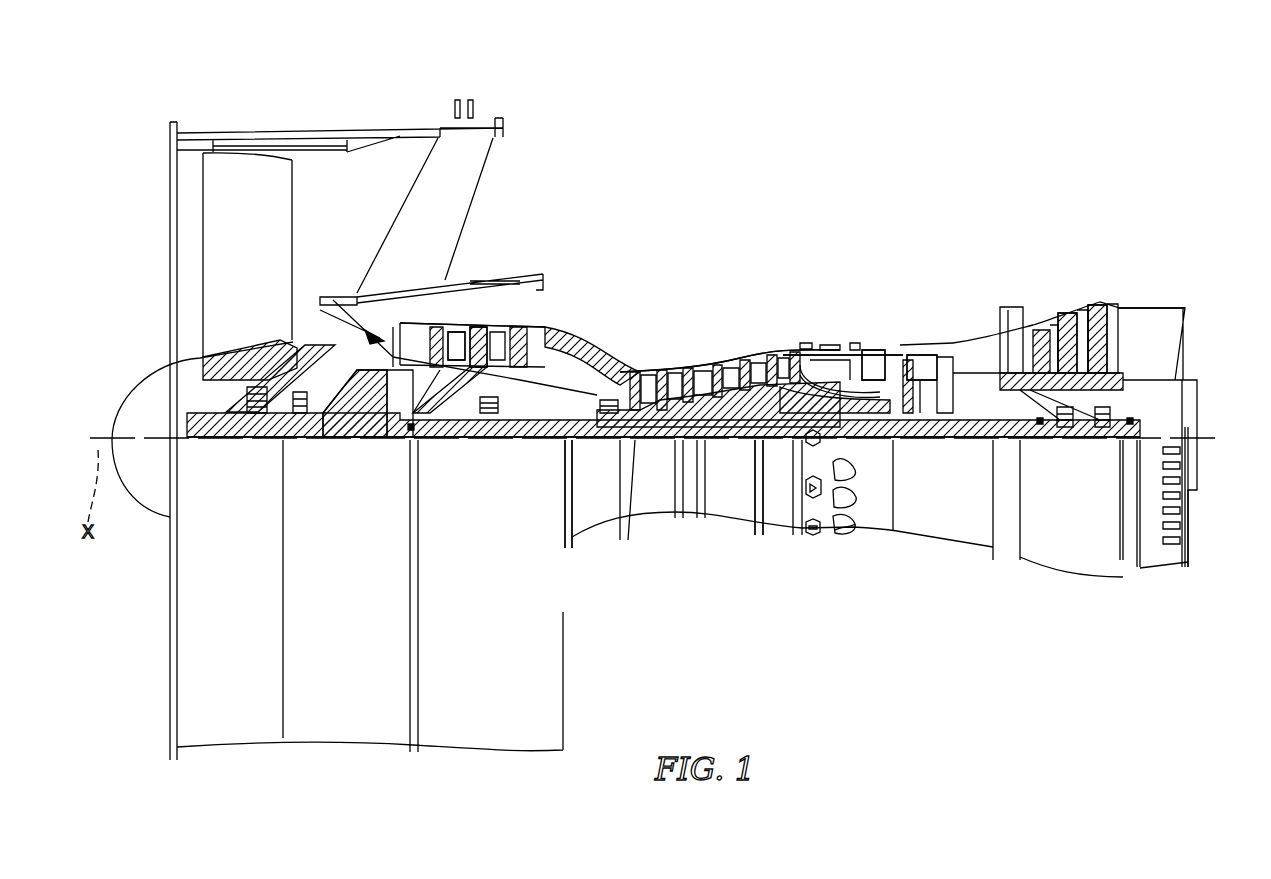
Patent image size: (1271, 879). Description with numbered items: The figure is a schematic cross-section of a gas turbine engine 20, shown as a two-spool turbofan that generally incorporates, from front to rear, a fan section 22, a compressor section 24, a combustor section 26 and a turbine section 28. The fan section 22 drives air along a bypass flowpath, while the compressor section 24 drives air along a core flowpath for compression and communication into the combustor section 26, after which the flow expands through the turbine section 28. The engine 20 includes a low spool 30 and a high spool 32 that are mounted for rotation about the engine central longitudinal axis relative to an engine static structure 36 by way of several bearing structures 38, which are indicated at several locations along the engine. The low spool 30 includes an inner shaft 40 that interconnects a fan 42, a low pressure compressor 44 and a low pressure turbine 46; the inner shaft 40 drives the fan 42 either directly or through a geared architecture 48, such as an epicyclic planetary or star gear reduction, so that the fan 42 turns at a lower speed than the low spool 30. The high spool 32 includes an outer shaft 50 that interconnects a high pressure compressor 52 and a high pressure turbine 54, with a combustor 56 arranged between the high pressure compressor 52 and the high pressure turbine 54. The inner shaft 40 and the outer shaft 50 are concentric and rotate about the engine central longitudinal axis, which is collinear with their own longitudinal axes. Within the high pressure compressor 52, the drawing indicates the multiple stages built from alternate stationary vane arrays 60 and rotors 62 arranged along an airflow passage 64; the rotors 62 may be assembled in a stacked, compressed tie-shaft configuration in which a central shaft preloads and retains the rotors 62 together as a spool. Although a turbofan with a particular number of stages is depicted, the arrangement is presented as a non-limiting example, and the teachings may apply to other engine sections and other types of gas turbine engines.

The gas turbine engine 20 is at (962, 177).
The fan section 22 is at (163, 110).
The compressor section 24 is at (423, 243).
The combustor section 26 is at (807, 243).
The turbine section 28 is at (1130, 243).
The low spool 30 is at (733, 440).
The high spool 32 is at (767, 373).
The engine static structure 36 is at (781, 533).
The bearing structures 38 is at (920, 307).
The inner shaft 40 is at (590, 440).
The fan 42 is at (255, 268).
The low pressure compressor 44 is at (496, 330).
The low pressure turbine 46 is at (1066, 302).
The geared architecture 48 is at (350, 438).
The outer shaft 50 is at (893, 440).
The high pressure compressor 52 is at (717, 407).
The high pressure turbine 54 is at (912, 355).
The combustor 56 is at (858, 348).
The stationary vane arrays 60 is at (455, 333).
The rotors 62 is at (477, 330).
The airflow passage 64 is at (303, 315).